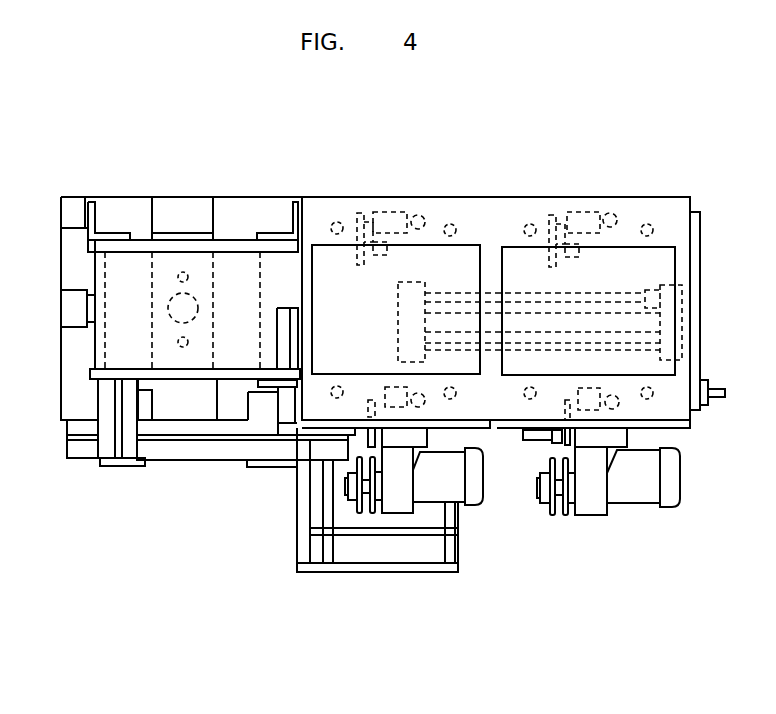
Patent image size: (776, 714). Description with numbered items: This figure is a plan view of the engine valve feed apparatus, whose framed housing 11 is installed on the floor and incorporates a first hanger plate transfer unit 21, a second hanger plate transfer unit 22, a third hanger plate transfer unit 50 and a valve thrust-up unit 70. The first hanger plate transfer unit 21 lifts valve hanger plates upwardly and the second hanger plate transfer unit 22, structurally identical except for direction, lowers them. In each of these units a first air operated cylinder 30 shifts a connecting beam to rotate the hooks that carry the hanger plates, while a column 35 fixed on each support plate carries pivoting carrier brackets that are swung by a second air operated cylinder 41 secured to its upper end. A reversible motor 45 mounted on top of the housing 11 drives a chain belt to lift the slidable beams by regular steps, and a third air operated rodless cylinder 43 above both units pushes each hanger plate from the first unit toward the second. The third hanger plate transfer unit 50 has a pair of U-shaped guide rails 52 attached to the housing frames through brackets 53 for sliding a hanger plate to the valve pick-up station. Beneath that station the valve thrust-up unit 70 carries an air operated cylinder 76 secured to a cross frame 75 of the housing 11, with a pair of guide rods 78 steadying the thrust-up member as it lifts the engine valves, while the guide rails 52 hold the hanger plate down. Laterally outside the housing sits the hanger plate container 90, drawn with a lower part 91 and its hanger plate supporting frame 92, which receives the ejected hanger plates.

The framed housing 11 is at (520, 197).
The first hanger plate transfer unit 21 is at (594, 190).
The second hanger plate transfer unit 22 is at (362, 190).
The first air operated cylinder 30 is at (333, 222).
The column 35 is at (365, 212).
The second air operated cylinder 41 is at (420, 214).
The third air operated rodless cylinder 43 is at (628, 300).
The reversible motor 45 is at (537, 294).
The third hanger plate transfer unit 50 is at (120, 176).
The U-shaped guide rails 52 is at (236, 240).
The brackets 53 is at (105, 198).
The valve thrust-up unit 70 is at (140, 325).
The cross frame 75 is at (166, 205).
The air operated cylinder 76 is at (199, 303).
The guide rods 78 is at (177, 277).
The hanger plate container 90 is at (290, 556).
The bottom plate 91 is at (357, 573).
The hanger plate supporting frame 92 is at (398, 538).